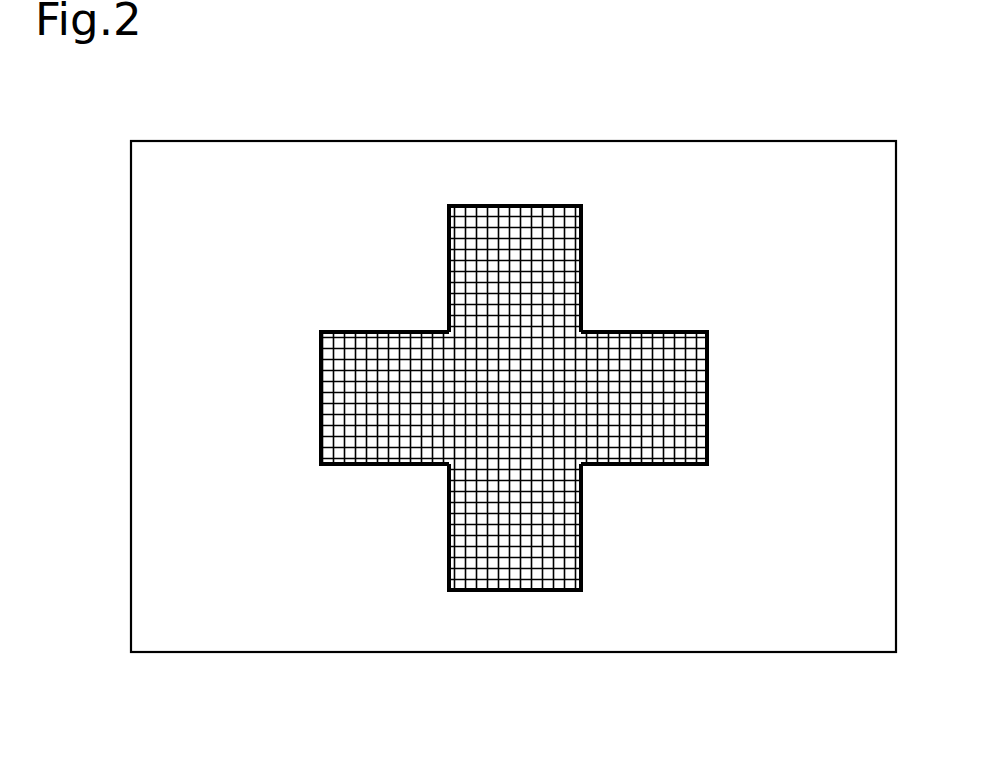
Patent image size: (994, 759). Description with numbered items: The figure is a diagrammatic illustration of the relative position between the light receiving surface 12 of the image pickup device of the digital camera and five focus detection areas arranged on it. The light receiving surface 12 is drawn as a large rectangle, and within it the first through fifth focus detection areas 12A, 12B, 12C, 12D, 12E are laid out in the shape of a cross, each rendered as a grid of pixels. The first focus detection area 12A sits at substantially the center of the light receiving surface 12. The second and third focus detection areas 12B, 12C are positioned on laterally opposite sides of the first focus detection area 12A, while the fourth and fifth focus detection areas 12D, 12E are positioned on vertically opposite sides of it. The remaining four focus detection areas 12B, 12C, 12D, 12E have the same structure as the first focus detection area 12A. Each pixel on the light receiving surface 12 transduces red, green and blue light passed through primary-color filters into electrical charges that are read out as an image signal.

The light receiving surface 12 is at (573, 141).
The first focus detection area 12A is at (515, 393).
The second focus detection area 12B is at (384, 382).
The third focus detection area 12C is at (642, 390).
The fourth focus detection area 12D is at (517, 272).
The fifth focus detection area 12E is at (513, 520).